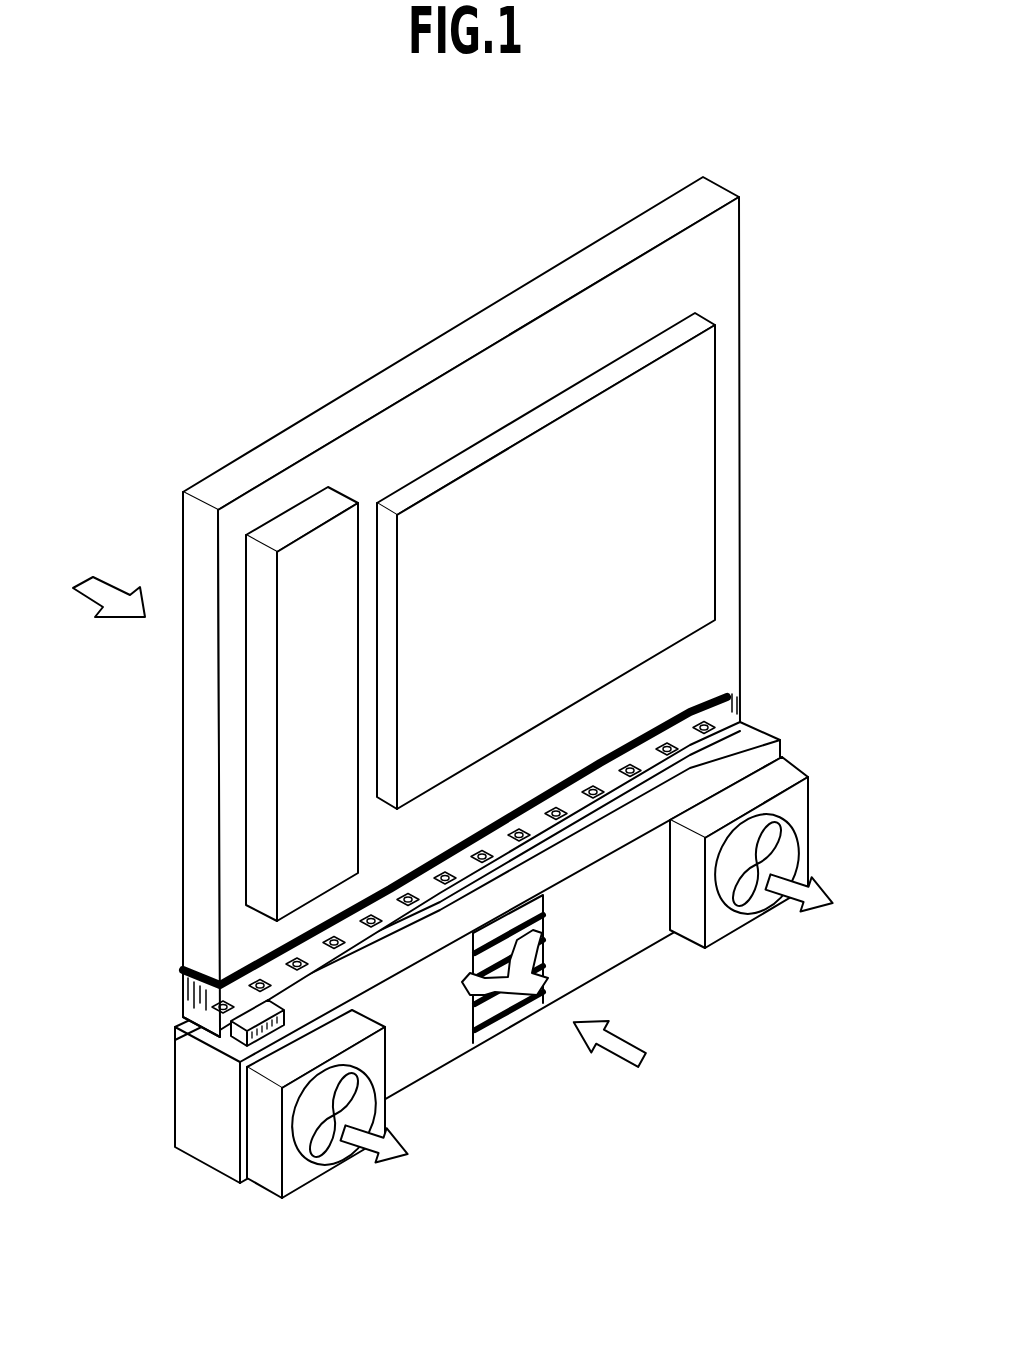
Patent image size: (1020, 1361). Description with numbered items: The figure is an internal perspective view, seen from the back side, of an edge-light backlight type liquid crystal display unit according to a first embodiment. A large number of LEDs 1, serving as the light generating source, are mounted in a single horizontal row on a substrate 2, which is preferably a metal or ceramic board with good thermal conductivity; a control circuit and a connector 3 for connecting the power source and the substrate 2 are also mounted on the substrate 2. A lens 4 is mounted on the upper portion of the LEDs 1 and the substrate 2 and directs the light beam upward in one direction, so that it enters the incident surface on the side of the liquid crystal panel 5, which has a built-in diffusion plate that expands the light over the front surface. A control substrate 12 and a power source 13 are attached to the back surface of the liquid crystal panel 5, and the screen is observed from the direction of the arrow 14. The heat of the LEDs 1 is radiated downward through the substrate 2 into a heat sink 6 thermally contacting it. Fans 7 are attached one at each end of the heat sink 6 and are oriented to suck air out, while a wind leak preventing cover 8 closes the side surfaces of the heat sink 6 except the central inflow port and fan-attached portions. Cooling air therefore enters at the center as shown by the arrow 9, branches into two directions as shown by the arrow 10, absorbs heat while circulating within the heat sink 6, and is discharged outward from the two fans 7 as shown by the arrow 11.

The LED 1 is at (745, 703).
The substrate 2 is at (752, 716).
The connector 3 is at (233, 1046).
The lens 4 is at (740, 690).
The liquid crystal panel 5 is at (743, 540).
The heat sink 6 is at (783, 737).
The fan 7 is at (800, 812).
The wind leak preventing cover 8 is at (612, 937).
The arrow 9 is at (626, 1052).
The arrow 10 is at (512, 1012).
The arrow 11 is at (822, 912).
The control substrate 12 is at (582, 568).
The power source 13 is at (308, 735).
The arrow 14 is at (92, 578).